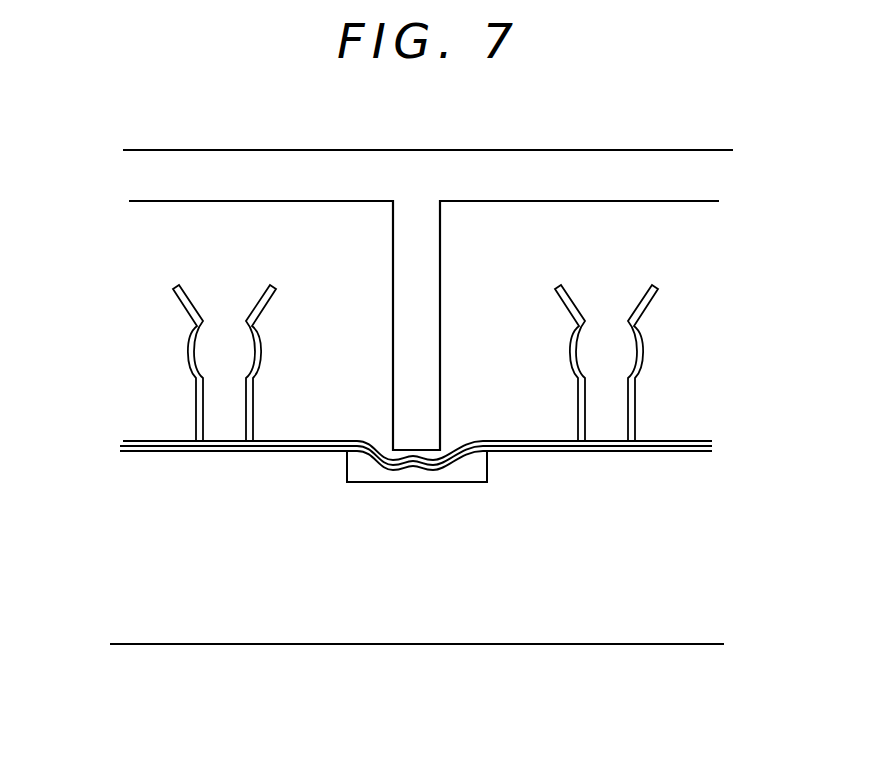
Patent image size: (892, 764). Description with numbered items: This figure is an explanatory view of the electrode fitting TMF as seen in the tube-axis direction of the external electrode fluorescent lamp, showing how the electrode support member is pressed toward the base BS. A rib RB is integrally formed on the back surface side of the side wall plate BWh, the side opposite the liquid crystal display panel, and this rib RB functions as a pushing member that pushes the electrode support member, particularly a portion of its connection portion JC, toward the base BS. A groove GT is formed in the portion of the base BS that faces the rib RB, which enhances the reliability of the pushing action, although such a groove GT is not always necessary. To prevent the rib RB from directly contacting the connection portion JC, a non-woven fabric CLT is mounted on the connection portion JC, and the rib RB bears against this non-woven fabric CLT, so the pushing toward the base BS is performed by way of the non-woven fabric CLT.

The side wall plate BWh is at (588, 165).
The rib RB is at (405, 273).
The electrode fitting TMF is at (177, 337).
The non-woven fabric CLT is at (688, 440).
The groove GT is at (390, 483).
The connection portion JC is at (218, 445).
The base BS is at (520, 585).